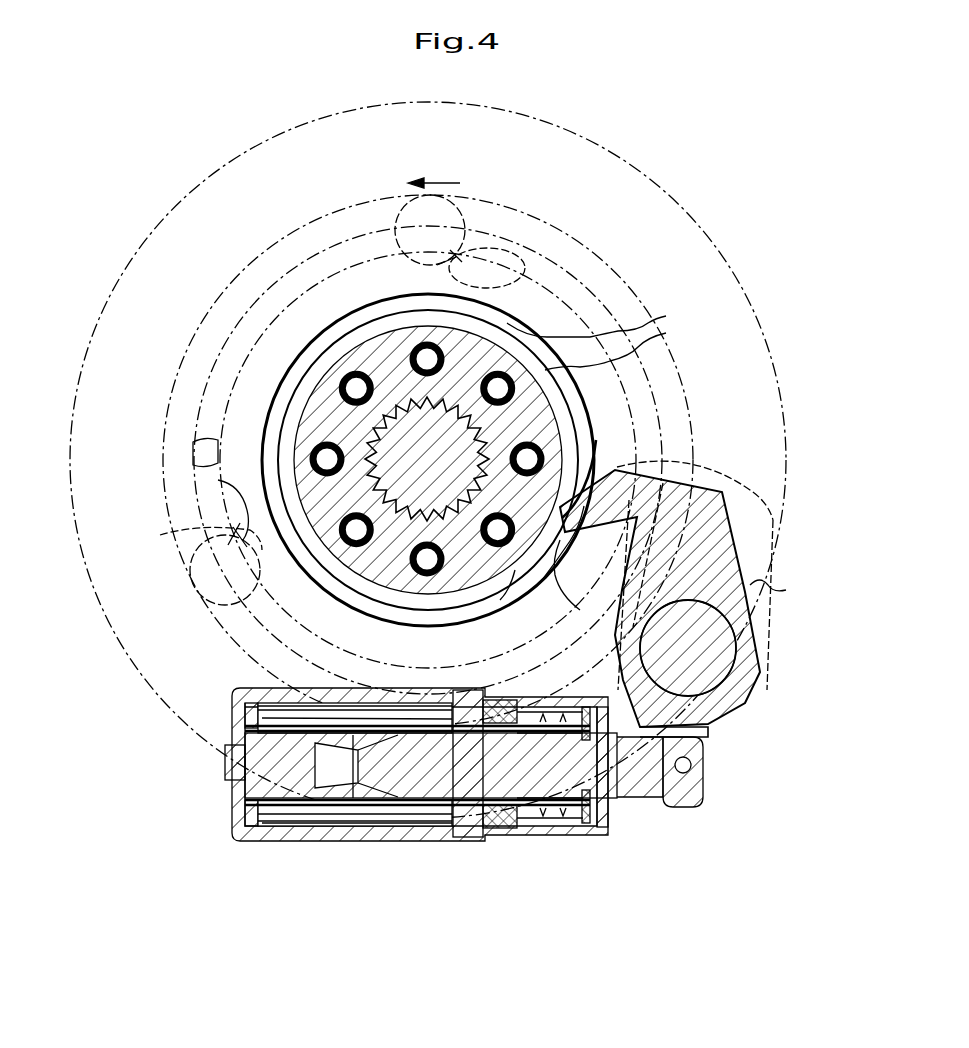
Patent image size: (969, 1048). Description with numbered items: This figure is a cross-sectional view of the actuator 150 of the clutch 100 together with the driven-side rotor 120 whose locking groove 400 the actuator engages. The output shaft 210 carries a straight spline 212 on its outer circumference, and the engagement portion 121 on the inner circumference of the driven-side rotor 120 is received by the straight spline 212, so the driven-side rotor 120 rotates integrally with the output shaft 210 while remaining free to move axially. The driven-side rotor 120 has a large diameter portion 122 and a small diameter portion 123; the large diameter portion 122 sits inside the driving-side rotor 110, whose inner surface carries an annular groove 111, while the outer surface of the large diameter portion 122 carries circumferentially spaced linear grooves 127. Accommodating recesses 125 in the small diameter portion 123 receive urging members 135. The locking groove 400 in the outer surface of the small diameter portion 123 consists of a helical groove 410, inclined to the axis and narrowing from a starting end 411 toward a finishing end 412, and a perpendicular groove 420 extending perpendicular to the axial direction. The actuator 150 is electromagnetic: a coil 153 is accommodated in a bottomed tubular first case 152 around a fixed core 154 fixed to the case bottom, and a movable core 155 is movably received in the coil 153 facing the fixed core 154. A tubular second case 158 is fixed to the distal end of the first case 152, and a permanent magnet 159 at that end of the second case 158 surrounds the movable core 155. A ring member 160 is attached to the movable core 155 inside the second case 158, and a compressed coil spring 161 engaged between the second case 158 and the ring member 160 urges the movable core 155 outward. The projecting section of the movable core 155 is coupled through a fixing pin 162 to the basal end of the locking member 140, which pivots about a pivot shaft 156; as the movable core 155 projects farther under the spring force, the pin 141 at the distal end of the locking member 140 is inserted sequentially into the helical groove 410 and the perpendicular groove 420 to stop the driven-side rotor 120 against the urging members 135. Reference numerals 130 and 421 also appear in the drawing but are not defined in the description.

The clutch 100 is at (706, 143).
The driving-side rotor 110 is at (188, 195).
The annular groove 111 is at (368, 202).
The driven-side rotor 120 is at (193, 443).
The engagement portion 121 is at (405, 401).
The large diameter portion 122 is at (193, 465).
The small diameter portion 123 is at (273, 388).
The accommodating recesses 125 is at (346, 543).
The linear grooves 127 is at (505, 247).
The roller 130 is at (466, 199).
The urging members 135 is at (353, 590).
The locking member 140 is at (767, 588).
The pin 141 is at (619, 468).
The actuator 150 is at (222, 682).
The first case 152 is at (280, 843).
The coil 153 is at (360, 803).
The fixed core 154 is at (228, 760).
The movable core 155 is at (426, 787).
The pivot shaft 156 is at (718, 662).
The second case 158 is at (562, 830).
The permanent magnet 159 is at (500, 828).
The ring member 160 is at (602, 835).
The coil spring 161 is at (586, 826).
The fixing pin 162 is at (683, 774).
The output shaft 210 is at (287, 427).
The straight spline 212 is at (530, 362).
The locking groove 400 is at (750, 325).
The helical groove 410 is at (645, 339).
The starting end 411 is at (560, 577).
The finishing end 412 is at (562, 472).
The perpendicular groove 420 is at (637, 335).
The pawl arm end 421 is at (502, 600).